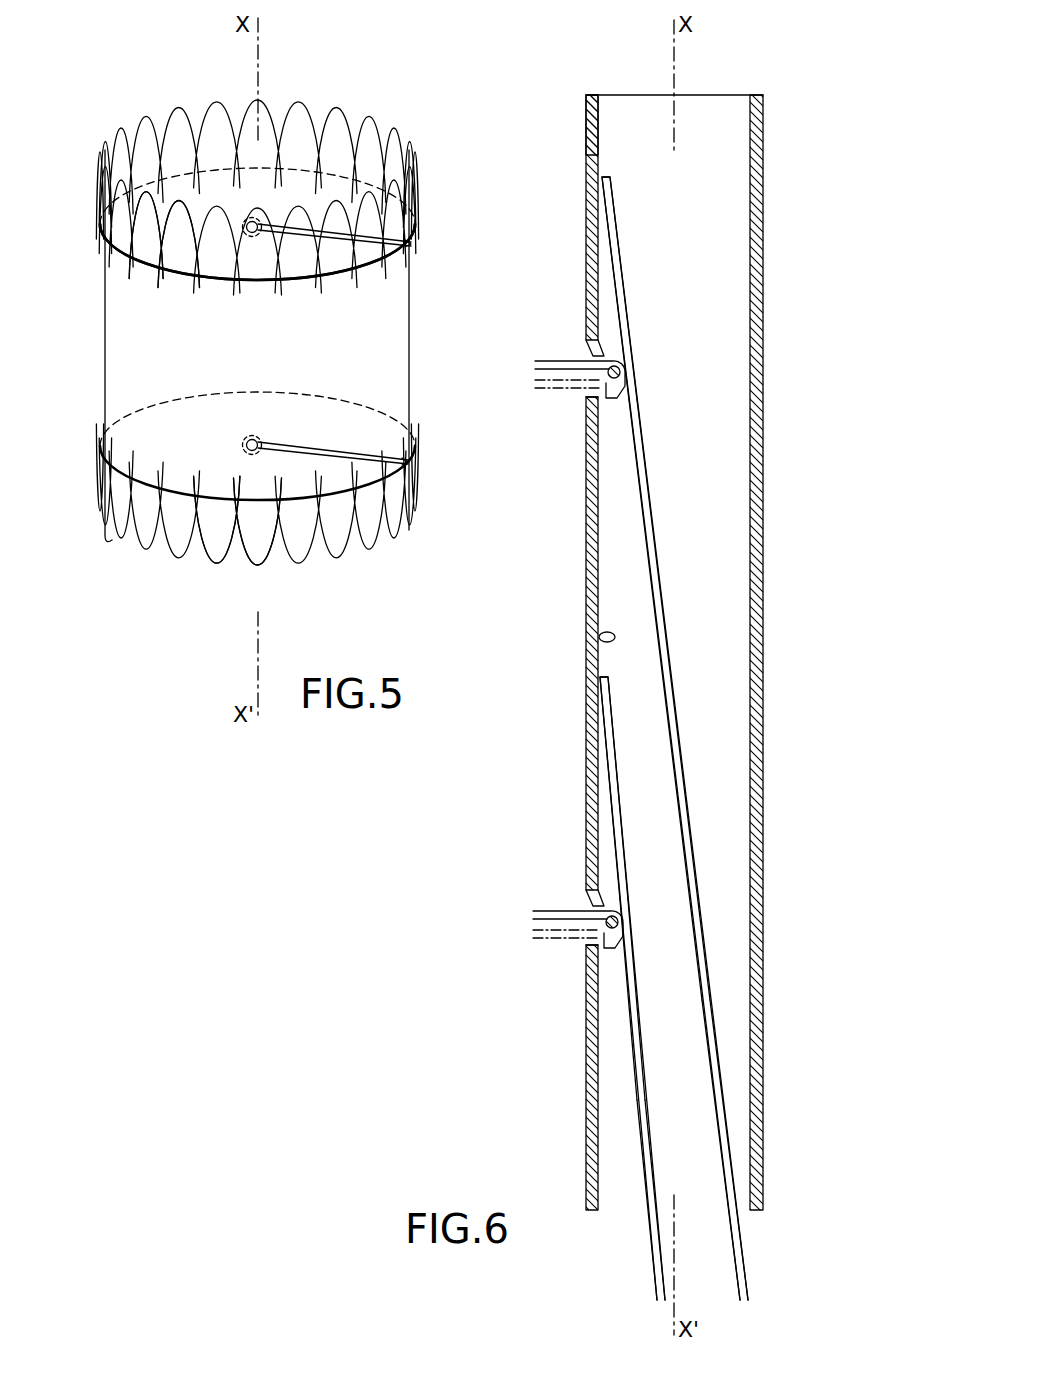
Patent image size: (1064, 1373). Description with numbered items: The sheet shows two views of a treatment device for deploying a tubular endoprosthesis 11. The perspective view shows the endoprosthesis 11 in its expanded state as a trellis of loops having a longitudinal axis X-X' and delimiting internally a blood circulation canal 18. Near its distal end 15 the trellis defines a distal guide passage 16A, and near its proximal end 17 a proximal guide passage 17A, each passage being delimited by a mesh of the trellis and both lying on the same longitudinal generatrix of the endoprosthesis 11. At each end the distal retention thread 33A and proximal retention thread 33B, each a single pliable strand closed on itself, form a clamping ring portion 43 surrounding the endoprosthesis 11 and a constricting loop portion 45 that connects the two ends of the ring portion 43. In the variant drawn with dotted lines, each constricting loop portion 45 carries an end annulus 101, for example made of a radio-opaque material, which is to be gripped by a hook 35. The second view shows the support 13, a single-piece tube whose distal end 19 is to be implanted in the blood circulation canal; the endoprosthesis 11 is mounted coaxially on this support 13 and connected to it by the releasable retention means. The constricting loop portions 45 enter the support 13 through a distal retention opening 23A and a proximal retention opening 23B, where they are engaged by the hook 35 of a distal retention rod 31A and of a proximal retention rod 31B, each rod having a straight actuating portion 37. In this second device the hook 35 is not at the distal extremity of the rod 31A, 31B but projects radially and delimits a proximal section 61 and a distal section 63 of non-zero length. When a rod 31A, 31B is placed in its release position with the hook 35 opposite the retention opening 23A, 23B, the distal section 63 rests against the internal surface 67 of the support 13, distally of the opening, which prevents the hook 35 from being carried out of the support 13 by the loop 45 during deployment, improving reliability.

In FIG. 5, the tubular endoprosthesis 11 is at (96, 318).
In FIG. 6, the support 13 is at (590, 1125).
In FIG. 5, the distal end of the endoprosthesis 15 is at (115, 190).
In FIG. 5, the distal guide passage 16A is at (412, 244).
In FIG. 5, the proximal end of the endoprosthesis 17 is at (118, 522).
In FIG. 5, the proximal guide passage 17A is at (402, 488).
In FIG. 5, the blood circulation canal 18 is at (271, 202).
In FIG. 6, the distal end of the support 19 is at (590, 118).
In FIG. 6, the distal retention opening 23A is at (595, 348).
In FIG. 6, the proximal retention opening 23B is at (595, 897).
In FIG. 6, the distal retention rod 31A is at (656, 472).
In FIG. 6, the proximal retention rod 31B is at (653, 1016).
In FIG. 5, the distal retention thread 33A is at (282, 295).
In FIG. 6, the distal retention thread 33A is at (538, 398).
In FIG. 5, the proximal retention thread 33B is at (300, 512).
In FIG. 6, the proximal retention thread 33B is at (538, 946).
In FIG. 6, the hook 35 is at (620, 366).
In FIG. 6, the straight actuating portion 37 is at (656, 632).
In FIG. 5, the clamping ring portion 43 is at (165, 278).
In FIG. 5, the constricting loop portion 45 is at (337, 135).
In FIG. 6, the constricting loop portion 45 is at (568, 380).
In FIG. 6, the proximal section 61 is at (652, 556).
In FIG. 6, the distal section 63 is at (615, 238).
In FIG. 6, the internal surface of the support 67 is at (600, 643).
In FIG. 5, the end annulus 101 is at (249, 240).